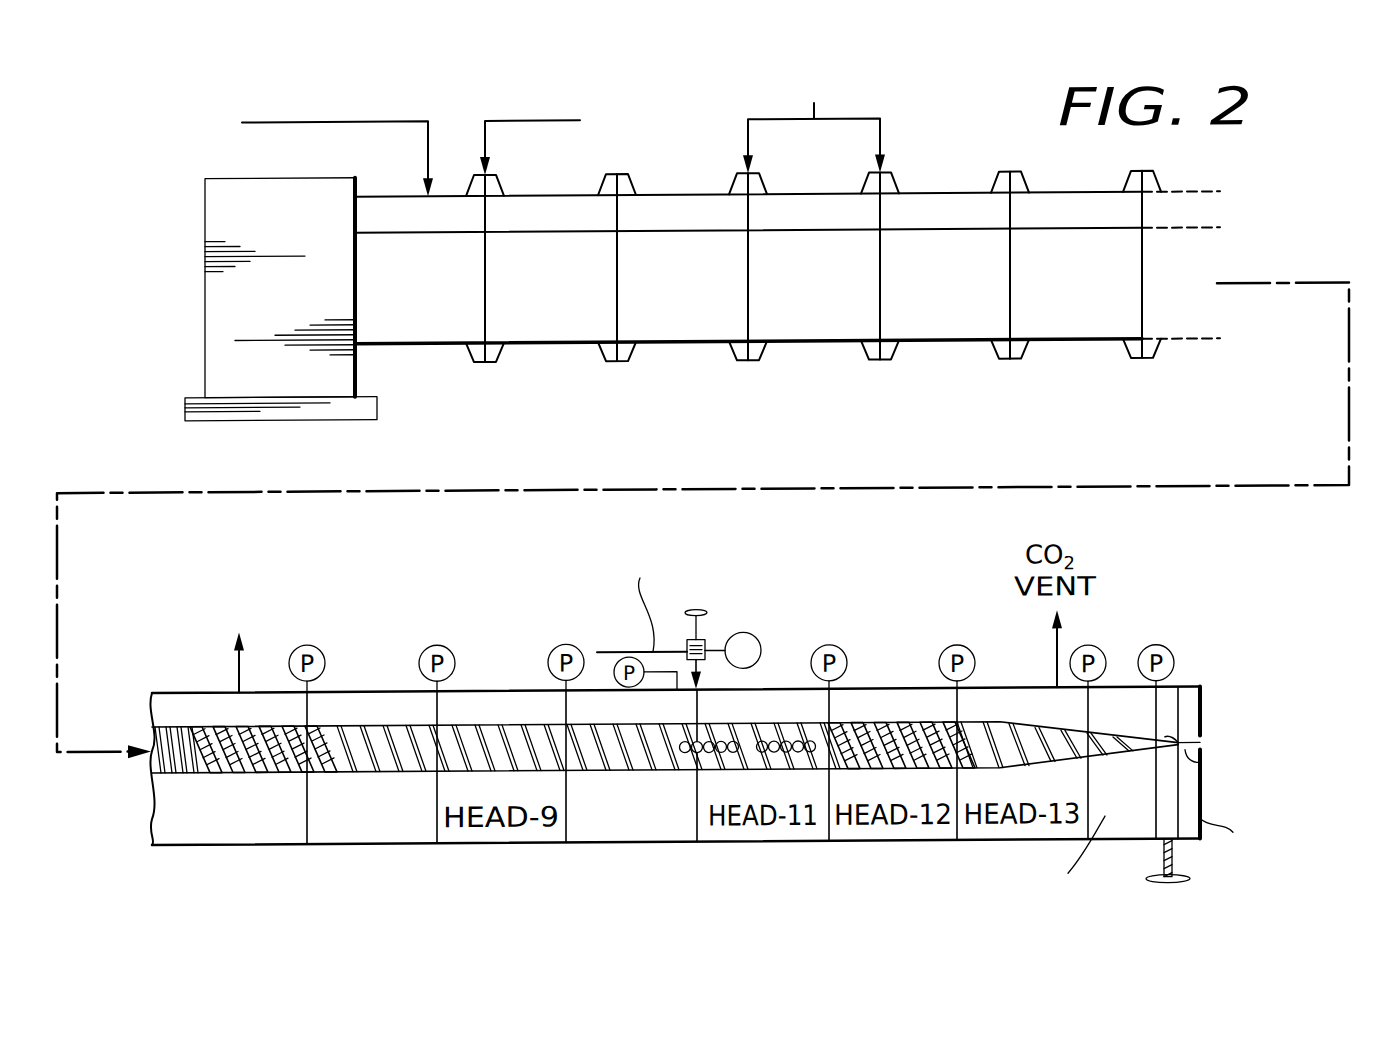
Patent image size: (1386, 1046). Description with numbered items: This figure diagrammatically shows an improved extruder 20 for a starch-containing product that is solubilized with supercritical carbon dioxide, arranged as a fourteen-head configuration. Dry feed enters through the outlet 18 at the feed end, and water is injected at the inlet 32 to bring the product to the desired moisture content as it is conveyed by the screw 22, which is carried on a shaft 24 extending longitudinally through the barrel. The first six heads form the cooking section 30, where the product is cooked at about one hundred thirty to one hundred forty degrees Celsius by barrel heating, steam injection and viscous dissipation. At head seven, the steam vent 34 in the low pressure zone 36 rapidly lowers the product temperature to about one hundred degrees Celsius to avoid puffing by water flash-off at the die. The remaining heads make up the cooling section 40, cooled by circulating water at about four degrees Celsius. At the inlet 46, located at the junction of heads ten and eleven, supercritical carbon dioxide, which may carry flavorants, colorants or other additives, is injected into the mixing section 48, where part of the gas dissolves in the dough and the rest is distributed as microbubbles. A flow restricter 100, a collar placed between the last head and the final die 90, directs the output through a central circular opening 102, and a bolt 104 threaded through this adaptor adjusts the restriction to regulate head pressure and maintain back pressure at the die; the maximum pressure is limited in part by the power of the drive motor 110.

The outlet 18 is at (407, 126).
The extruder 20 is at (667, 196).
The screw 22 is at (330, 727).
The shaft 24 is at (160, 765).
The cooking section 30 is at (702, 249).
The inlet 32 is at (503, 188).
The steam vent 34 is at (240, 682).
The low pressure zone 36 is at (212, 855).
The cooling section 40 is at (357, 855).
The inlet 46 is at (703, 690).
The mixing section 48 is at (696, 856).
The die 90 is at (1200, 773).
The flow restricter 100 is at (1157, 826).
The central circular opening 102 is at (1176, 745).
The bolt 104 is at (1176, 878).
The drive motor 110 is at (340, 373).